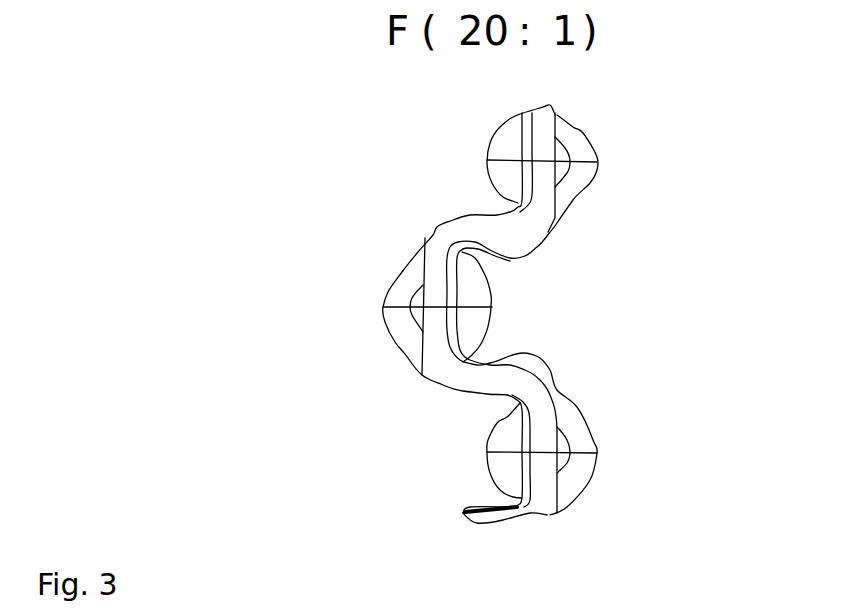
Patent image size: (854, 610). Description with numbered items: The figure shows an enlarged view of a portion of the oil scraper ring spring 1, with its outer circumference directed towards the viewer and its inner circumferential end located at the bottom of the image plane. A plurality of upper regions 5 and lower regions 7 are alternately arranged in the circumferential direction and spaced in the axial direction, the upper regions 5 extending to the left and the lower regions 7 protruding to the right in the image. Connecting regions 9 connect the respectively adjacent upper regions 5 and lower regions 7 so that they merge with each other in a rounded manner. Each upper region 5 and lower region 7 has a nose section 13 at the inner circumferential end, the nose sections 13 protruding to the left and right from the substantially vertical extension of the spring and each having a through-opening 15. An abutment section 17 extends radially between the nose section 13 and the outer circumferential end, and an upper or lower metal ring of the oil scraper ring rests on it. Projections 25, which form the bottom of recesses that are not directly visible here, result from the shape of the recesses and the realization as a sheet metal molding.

The oil scraper ring spring 1 is at (232, 181).
The upper region 5 is at (433, 322).
The lower region 7 is at (543, 170).
The connecting region 9 is at (456, 370).
The nose section 13 is at (573, 425).
The through-opening 15 is at (568, 449).
The abutment section 17 is at (557, 172).
The projection 25 is at (467, 290).